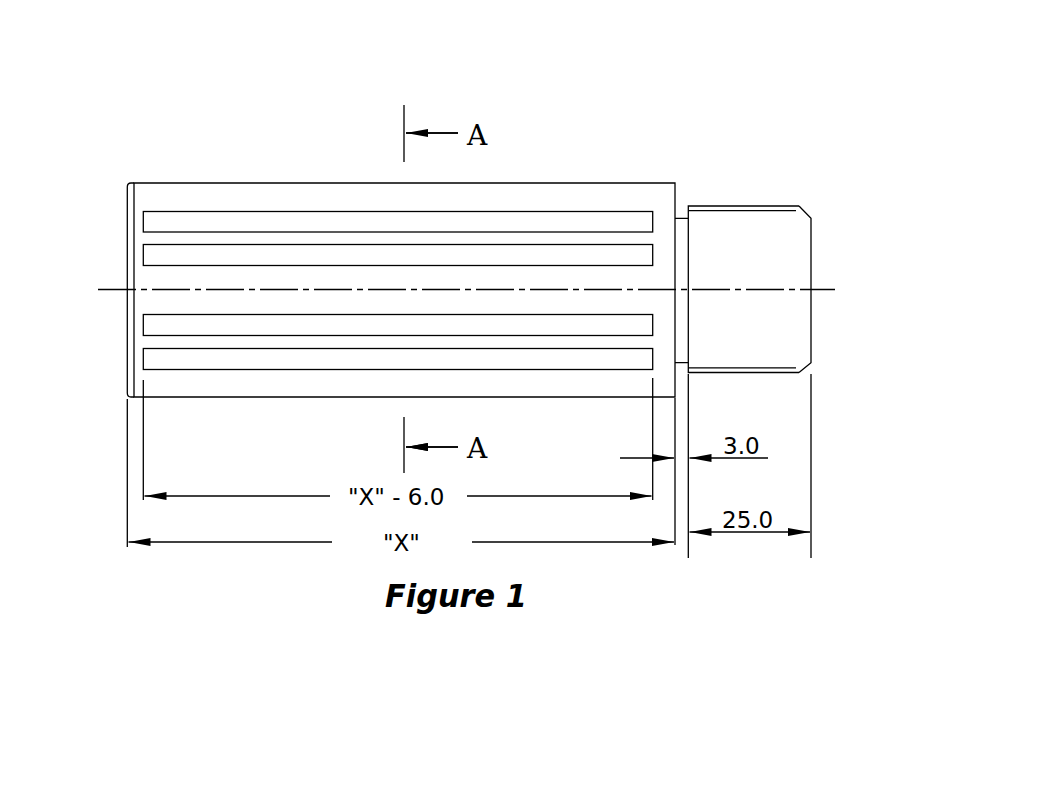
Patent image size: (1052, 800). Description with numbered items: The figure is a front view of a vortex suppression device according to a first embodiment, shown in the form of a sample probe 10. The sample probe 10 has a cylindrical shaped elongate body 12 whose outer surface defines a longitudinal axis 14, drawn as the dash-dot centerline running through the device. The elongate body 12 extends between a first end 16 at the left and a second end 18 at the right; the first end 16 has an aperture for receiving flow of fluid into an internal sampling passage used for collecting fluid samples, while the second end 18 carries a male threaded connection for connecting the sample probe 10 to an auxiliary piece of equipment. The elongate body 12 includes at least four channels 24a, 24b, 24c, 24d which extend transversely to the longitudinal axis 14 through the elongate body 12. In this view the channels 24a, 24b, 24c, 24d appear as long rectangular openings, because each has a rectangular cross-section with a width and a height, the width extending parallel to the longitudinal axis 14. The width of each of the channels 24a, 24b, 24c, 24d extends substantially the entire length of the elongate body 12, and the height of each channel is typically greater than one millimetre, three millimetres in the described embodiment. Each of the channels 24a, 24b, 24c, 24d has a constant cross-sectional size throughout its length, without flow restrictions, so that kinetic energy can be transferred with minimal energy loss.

The sample probe 10 is at (174, 67).
The elongate body 12 is at (168, 196).
The longitudinal axis 14 is at (711, 290).
The first end 16 is at (124, 273).
The second end 18 is at (814, 250).
The channel 24a is at (190, 219).
The channel 24b is at (269, 256).
The channel 24c is at (263, 323).
The channel 24d is at (367, 358).